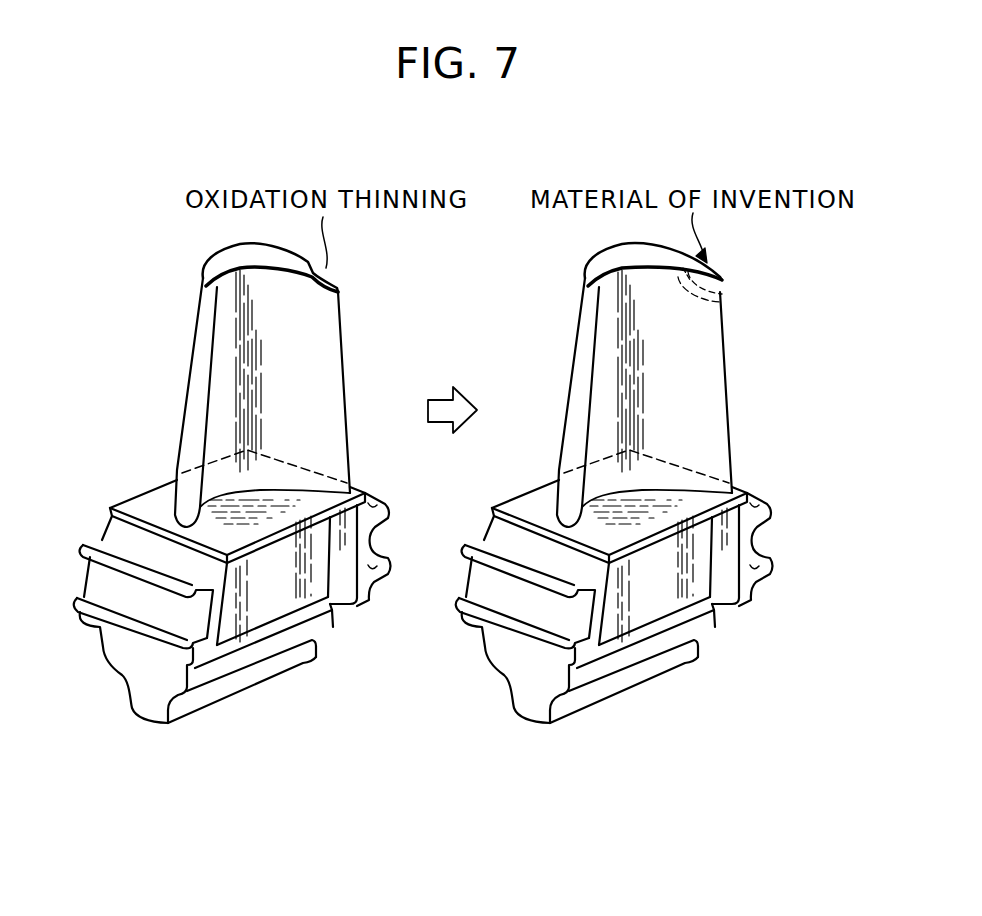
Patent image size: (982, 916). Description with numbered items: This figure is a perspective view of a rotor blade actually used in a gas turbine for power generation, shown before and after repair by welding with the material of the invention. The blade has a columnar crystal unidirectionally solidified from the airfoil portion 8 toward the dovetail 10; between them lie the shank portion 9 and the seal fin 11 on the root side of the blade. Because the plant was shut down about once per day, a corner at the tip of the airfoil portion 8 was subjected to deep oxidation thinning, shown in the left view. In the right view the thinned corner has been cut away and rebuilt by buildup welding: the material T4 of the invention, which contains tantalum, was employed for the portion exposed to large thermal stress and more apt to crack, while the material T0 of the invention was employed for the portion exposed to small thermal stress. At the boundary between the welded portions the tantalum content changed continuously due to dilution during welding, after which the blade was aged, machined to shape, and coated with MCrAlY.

The airfoil portion 8 is at (186, 377).
The shank portion 9 is at (307, 598).
The dovetail 10 is at (245, 682).
The seal fin 11 is at (105, 621).
The material T0 of the invention T0 is at (727, 279).
The material T4 of the invention T4 is at (688, 296).